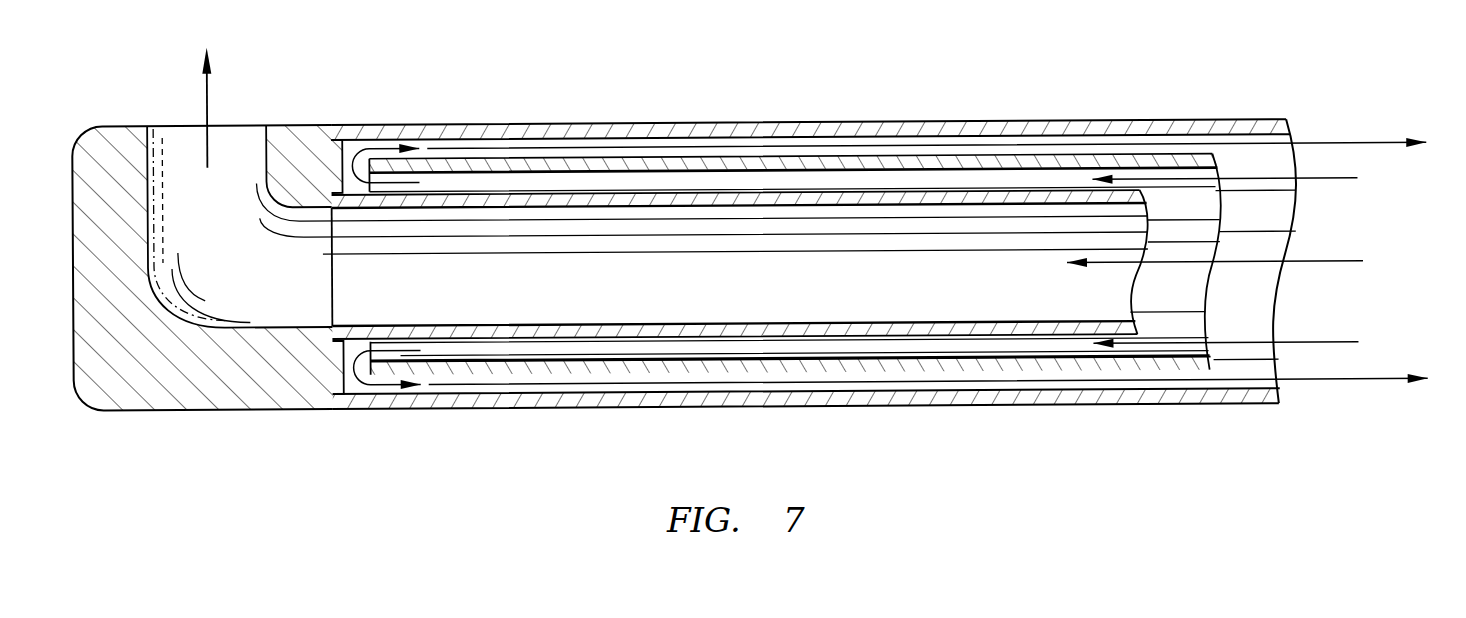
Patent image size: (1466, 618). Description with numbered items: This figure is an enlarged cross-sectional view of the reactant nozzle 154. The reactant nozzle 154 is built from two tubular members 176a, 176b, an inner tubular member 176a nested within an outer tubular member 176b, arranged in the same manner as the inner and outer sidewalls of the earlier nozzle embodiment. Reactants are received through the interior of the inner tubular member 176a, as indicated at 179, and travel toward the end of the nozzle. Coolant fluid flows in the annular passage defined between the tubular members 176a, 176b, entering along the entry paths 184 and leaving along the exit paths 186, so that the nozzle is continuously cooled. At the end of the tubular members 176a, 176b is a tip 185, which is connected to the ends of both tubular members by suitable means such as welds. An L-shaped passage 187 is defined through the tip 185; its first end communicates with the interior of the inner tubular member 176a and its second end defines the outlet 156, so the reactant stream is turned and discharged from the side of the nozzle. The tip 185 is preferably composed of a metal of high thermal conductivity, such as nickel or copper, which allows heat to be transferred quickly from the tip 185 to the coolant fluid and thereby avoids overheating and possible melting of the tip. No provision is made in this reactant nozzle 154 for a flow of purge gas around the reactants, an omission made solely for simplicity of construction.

The reactant nozzle 154 is at (447, 112).
The outlet 156 is at (237, 125).
The tubular member 176a is at (613, 209).
The tubular member 176b is at (663, 125).
The reactants 179 is at (1363, 266).
The entry paths 184 is at (1358, 185).
The tip 185 is at (301, 125).
The exit paths 186 is at (1373, 148).
The L-shaped passage 187 is at (256, 268).